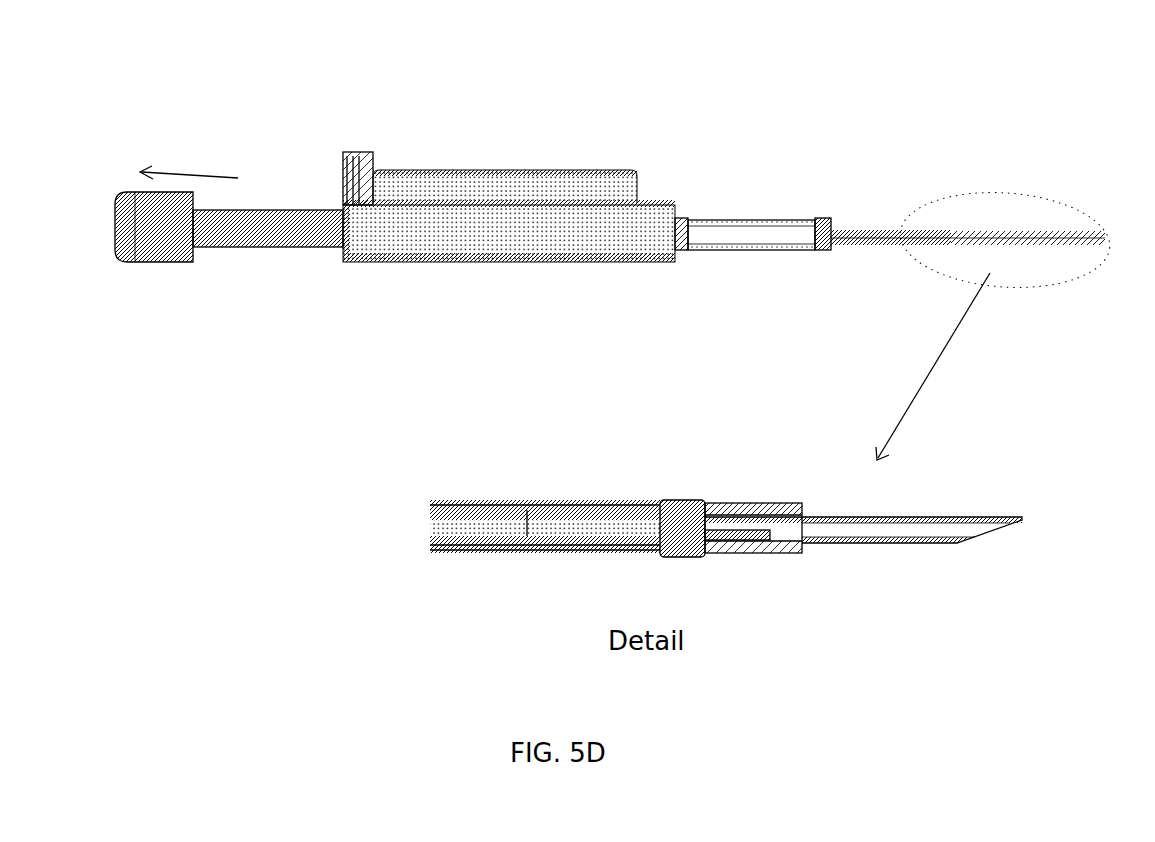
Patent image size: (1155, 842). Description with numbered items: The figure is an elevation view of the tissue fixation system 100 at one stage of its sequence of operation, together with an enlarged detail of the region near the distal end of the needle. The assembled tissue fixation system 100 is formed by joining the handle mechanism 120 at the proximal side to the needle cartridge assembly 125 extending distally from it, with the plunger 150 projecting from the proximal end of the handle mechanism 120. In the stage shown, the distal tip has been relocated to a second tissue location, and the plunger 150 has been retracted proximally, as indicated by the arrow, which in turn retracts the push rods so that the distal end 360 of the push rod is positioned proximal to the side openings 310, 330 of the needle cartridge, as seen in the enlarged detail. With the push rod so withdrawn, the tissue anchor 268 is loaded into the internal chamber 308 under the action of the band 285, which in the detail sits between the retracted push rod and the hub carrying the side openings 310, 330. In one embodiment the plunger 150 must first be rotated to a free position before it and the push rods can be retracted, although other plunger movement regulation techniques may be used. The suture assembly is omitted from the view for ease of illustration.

The tissue fixation system 100 is at (278, 316).
The plunger 150 is at (297, 212).
The handle mechanism 120 is at (452, 172).
The needle cartridge assembly 125 is at (875, 222).
The distal end 360 is at (613, 500).
The tissue anchor 268 is at (638, 556).
The band 285 is at (677, 498).
The side opening 310 is at (712, 556).
The side opening 330 is at (775, 579).
The internal chamber 308 is at (857, 540).